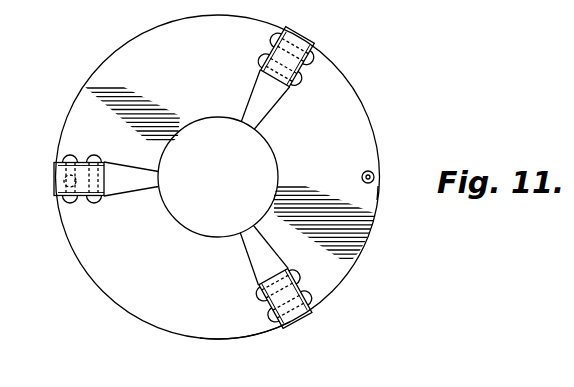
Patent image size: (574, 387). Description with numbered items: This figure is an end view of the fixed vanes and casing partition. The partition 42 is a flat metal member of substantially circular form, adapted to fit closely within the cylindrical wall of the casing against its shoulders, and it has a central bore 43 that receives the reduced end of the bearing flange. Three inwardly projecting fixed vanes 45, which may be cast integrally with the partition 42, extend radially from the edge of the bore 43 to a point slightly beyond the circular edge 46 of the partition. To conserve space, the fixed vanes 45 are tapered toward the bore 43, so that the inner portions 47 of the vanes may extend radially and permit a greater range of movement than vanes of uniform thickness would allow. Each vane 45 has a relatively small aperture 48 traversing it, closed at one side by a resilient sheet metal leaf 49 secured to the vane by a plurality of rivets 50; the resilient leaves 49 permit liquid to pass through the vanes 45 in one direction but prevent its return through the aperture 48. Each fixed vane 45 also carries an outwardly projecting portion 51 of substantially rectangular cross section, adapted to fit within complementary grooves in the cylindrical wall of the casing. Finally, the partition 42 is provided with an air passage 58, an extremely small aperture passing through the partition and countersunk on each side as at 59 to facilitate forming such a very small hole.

The partition 42 is at (147, 305).
The central bore 43 is at (177, 217).
The fixed vanes 45 is at (257, 95).
The circular edge 46 is at (244, 340).
The inner portions 47 is at (248, 268).
The aperture 48 is at (305, 288).
The resilient sheet metal leaf 49 is at (300, 82).
The rivets 50 is at (262, 59).
The outwardly projecting portion 51 is at (298, 325).
The air passage 58 is at (372, 172).
The countersink 59 is at (378, 191).